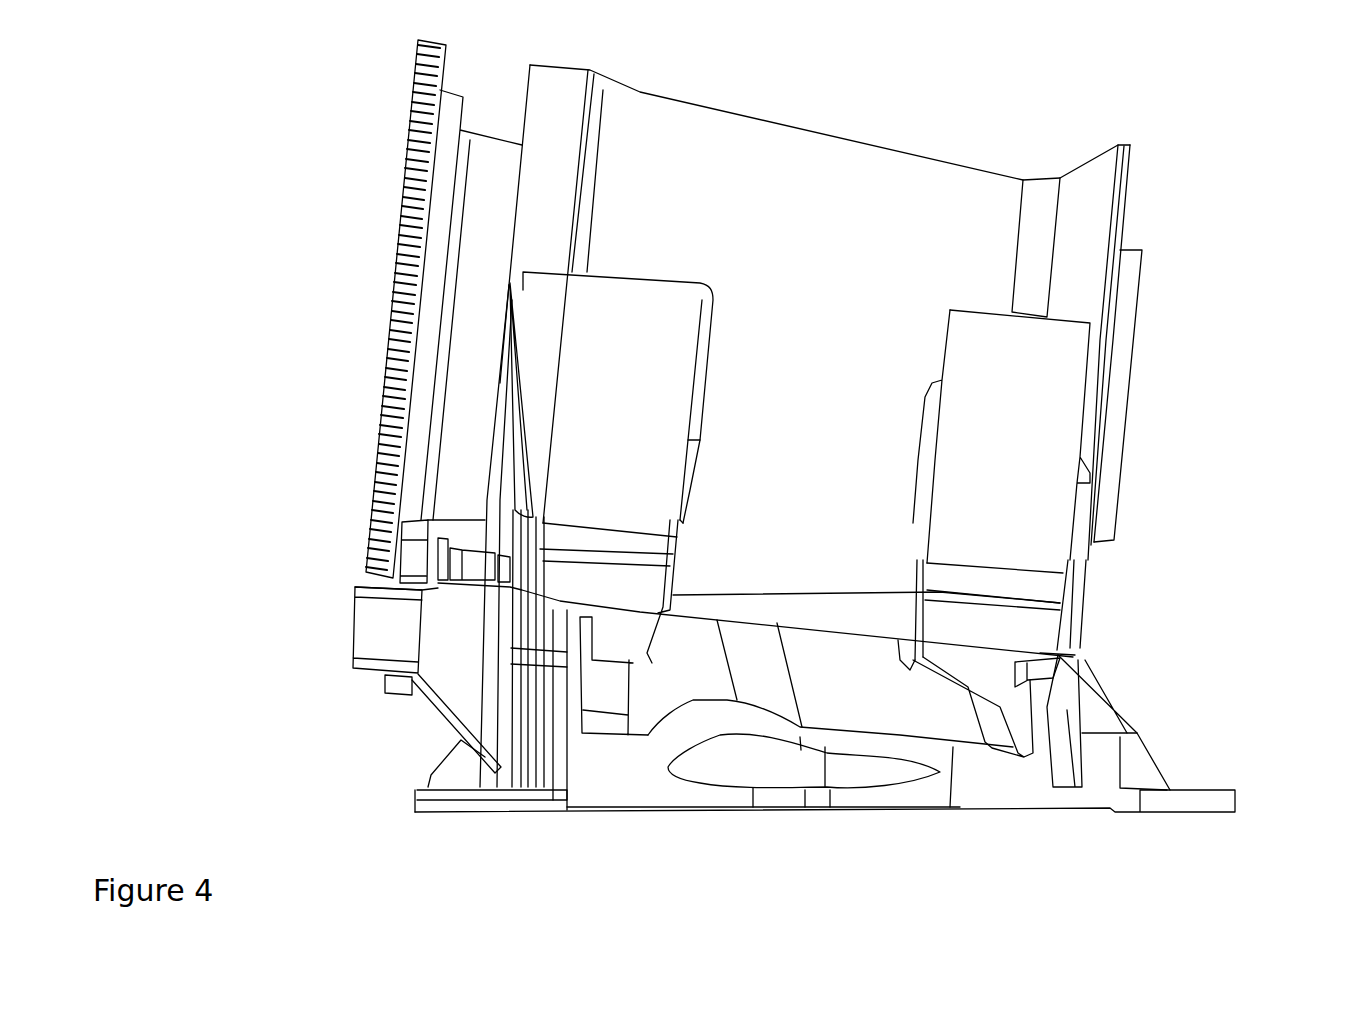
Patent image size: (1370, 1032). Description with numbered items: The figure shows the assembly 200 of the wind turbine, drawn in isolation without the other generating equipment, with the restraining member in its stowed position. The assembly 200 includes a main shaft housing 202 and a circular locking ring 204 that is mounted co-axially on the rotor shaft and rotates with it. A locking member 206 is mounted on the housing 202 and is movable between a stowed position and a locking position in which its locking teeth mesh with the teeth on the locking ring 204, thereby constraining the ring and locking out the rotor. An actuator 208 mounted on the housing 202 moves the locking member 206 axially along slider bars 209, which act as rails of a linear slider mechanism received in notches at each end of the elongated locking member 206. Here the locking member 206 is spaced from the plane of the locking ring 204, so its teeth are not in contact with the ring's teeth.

The assembly 200 is at (1203, 233).
The main shaft housing 202 is at (880, 187).
The locking ring 204 is at (398, 253).
The locking member 206 is at (413, 548).
The actuator 208 is at (434, 565).
The slider bars 209 is at (375, 613).